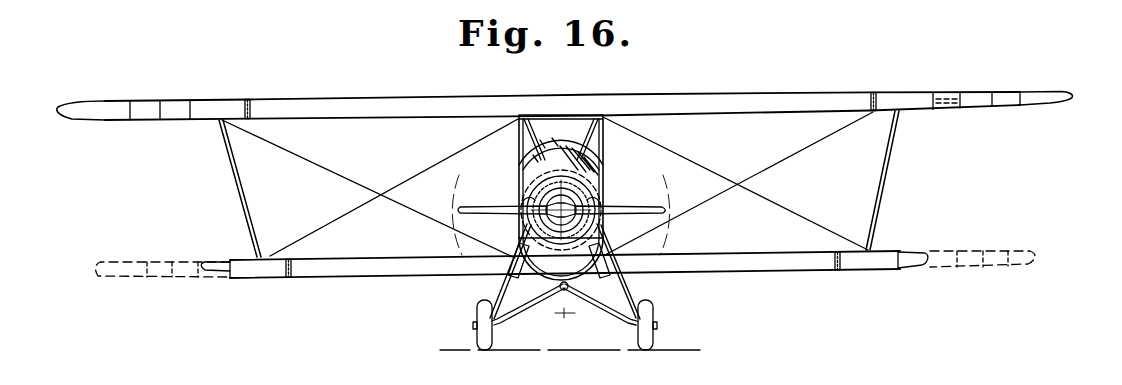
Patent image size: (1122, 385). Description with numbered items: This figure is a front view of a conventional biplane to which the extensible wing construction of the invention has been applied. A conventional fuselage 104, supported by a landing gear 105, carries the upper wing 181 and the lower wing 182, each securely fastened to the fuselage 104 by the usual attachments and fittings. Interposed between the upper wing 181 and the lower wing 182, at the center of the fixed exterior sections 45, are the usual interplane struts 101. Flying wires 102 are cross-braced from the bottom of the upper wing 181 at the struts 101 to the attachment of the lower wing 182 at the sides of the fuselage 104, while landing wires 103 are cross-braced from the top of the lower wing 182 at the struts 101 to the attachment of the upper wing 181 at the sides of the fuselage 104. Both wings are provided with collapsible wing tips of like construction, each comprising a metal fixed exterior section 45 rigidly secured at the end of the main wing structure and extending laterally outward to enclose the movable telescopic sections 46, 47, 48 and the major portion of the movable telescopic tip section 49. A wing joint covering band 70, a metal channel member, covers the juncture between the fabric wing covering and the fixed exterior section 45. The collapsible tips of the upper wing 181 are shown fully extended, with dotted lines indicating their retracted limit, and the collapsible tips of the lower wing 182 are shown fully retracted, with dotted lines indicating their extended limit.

The fixed exterior section 45 is at (222, 103).
The movable telescopic section 46 is at (178, 119).
The movable telescopic section 47 is at (144, 104).
The movable telescopic section 48 is at (118, 119).
The movable telescopic tip section 49 is at (77, 108).
The wing joint covering band 70 is at (250, 100).
The interplane strut 101 is at (238, 196).
The flying wire 102 is at (347, 176).
The landing wire 103 is at (349, 220).
The fuselage 104 is at (576, 165).
The landing gear 105 is at (590, 308).
The upper wing 181 is at (620, 105).
The lower wing 182 is at (677, 270).